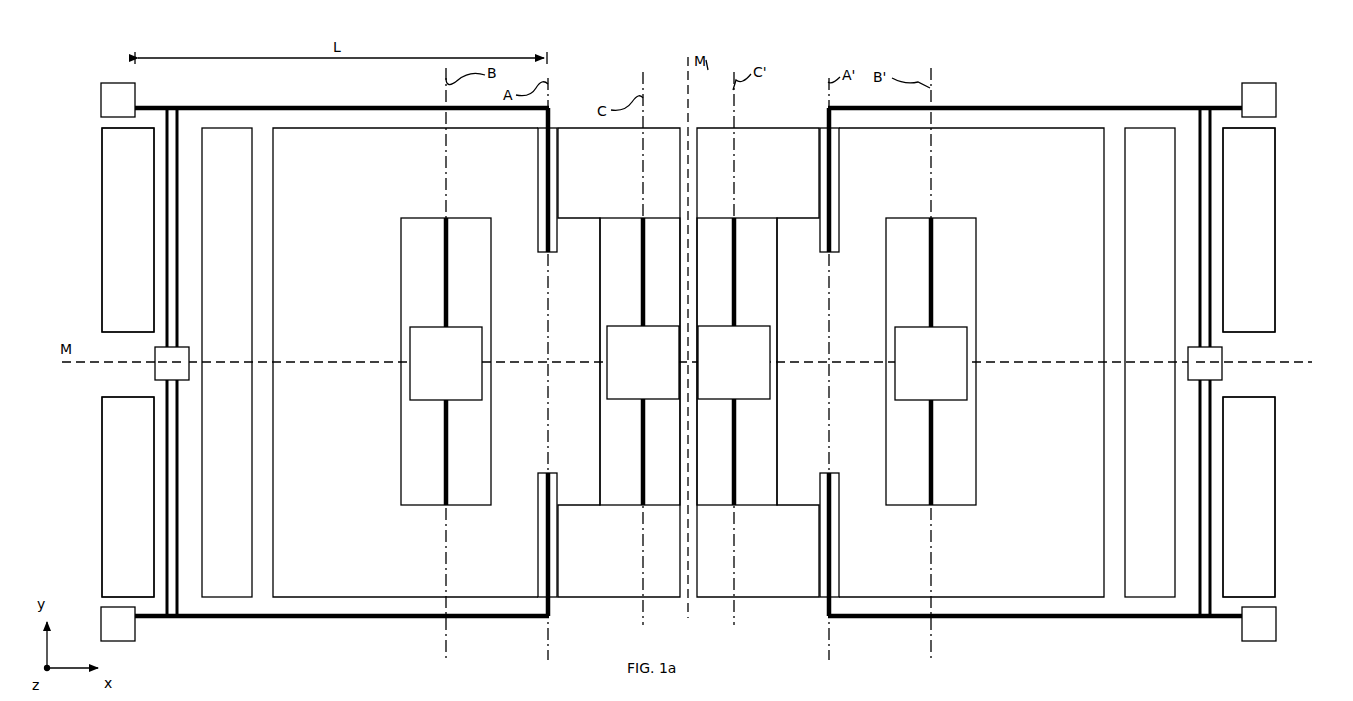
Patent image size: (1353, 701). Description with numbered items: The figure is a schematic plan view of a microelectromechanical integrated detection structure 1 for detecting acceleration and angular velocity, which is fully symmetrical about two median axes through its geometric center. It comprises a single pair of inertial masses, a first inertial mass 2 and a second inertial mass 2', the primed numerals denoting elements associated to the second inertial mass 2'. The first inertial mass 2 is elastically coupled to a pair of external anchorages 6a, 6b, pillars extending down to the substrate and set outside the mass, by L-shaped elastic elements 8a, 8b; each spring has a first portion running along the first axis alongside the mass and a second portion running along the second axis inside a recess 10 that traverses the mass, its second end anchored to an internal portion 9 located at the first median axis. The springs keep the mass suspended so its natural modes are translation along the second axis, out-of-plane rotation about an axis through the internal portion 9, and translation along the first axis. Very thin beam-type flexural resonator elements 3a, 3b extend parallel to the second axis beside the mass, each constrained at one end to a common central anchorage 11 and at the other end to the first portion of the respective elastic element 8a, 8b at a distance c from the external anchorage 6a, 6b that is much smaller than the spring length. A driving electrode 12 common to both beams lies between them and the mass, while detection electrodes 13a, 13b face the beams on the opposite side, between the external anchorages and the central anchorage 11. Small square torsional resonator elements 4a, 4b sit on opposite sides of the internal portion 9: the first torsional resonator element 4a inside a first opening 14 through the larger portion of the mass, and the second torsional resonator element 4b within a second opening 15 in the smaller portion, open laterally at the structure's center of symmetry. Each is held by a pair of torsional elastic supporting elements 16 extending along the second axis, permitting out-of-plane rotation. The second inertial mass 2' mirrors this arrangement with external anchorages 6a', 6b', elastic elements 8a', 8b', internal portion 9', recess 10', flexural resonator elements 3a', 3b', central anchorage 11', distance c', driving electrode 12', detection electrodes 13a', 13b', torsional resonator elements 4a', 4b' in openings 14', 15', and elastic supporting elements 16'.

The integrated detection structure 1 is at (1292, 103).
The first inertial mass 2 is at (405, 332).
The second inertial mass 2' is at (971, 332).
The flexural resonator element 3a is at (111, 497).
The flexural resonator element 3b is at (111, 230).
The flexural resonator element 3a' is at (1271, 497).
The flexural resonator element 3b' is at (1269, 230).
The first torsional resonator element 4a is at (446, 339).
The second torsional resonator element 4b is at (640, 361).
The first torsional resonator element 4a' is at (931, 339).
The second torsional resonator element 4b' is at (737, 361).
The external anchorage 6a is at (128, 648).
The external anchorage 6b is at (90, 100).
The external anchorage 6a' is at (1283, 647).
The external anchorage 6b' is at (1240, 91).
The elastic element 8a is at (342, 636).
The elastic element 8b is at (342, 87).
The elastic element 8a' is at (1035, 639).
The elastic element 8b' is at (1035, 86).
The internal portion 9 is at (537, 352).
The internal portion 9' is at (840, 350).
The recess 10 is at (564, 359).
The recess 10' is at (812, 349).
The central anchorage 11 is at (141, 366).
The central anchorage 11' is at (1256, 361).
The driving electrode 12 is at (227, 390).
The driving electrode 12' is at (1150, 393).
The detection electrode 13a is at (98, 497).
The detection electrode 13b is at (98, 230).
The detection electrode 13a' is at (1278, 497).
The detection electrode 13b' is at (1285, 230).
The first opening 14 is at (461, 361).
The first opening 14' is at (906, 361).
The second opening 15 is at (619, 362).
The second opening 15' is at (758, 362).
The elastic supporting element 16 is at (528, 361).
The elastic supporting element 16' is at (849, 361).
The distance c is at (174, 365).
The distance c' is at (1186, 365).